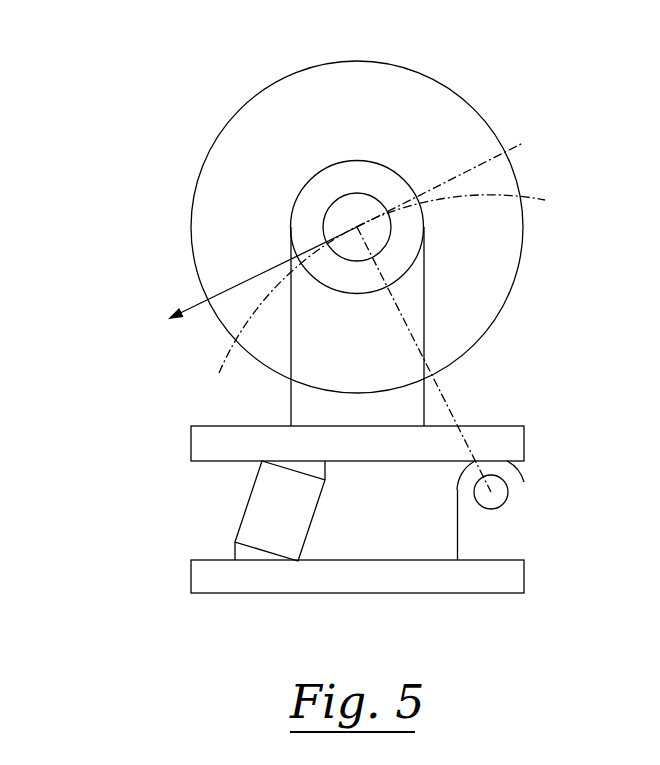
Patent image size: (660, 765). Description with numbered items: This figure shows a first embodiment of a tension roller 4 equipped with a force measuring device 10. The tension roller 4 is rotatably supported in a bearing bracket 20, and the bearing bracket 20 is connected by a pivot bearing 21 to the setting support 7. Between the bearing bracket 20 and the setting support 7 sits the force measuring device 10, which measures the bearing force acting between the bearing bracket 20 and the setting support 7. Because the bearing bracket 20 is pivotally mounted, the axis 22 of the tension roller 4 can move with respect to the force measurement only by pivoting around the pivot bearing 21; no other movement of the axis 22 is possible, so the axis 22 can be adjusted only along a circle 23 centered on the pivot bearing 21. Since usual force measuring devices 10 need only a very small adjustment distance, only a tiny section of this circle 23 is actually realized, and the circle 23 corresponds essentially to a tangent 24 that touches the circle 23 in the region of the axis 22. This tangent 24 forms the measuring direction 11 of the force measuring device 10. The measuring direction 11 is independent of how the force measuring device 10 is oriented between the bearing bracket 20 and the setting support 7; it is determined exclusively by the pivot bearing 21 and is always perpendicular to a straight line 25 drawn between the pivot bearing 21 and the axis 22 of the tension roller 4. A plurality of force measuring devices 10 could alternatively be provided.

The tension roller 4 is at (445, 127).
The setting support 7 is at (225, 573).
The force measuring device 10 is at (258, 517).
The measuring direction 11 is at (233, 282).
The bearing bracket 20 is at (368, 315).
The pivot bearing 21 is at (493, 493).
The axis 22 is at (357, 227).
The circle 23 is at (503, 194).
The tangent 24 is at (483, 163).
The straight line 25 is at (393, 297).